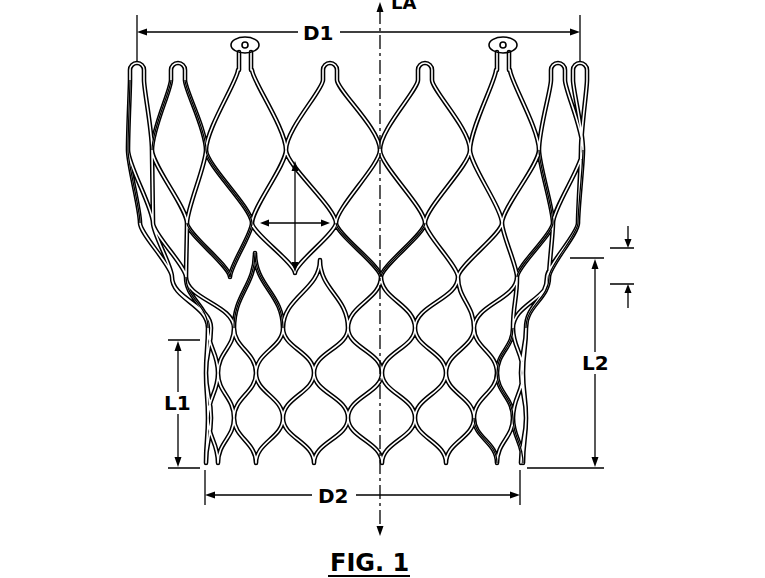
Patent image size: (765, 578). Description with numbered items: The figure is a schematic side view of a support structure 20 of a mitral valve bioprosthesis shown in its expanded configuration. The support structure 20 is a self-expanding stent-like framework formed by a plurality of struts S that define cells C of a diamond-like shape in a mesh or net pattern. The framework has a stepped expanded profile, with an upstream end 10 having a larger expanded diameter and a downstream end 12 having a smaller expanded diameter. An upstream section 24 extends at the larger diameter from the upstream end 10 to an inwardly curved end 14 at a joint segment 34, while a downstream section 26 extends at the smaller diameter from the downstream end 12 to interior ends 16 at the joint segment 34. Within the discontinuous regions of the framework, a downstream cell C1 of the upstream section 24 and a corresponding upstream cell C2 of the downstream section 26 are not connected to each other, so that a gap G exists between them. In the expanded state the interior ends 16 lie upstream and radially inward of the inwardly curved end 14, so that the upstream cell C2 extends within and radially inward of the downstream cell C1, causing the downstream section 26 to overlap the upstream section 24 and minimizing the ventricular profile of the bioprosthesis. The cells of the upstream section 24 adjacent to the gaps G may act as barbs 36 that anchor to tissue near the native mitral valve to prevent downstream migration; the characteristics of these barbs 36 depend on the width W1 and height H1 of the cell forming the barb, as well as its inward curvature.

The upstream end 10 is at (579, 64).
The downstream end 12 is at (528, 468).
The inwardly curved end 14 is at (579, 232).
The interior ends 16 is at (386, 277).
The support structure 20 is at (622, 189).
The upstream section 24 is at (128, 154).
The downstream section 26 is at (508, 375).
The joint segment 34 is at (625, 267).
The barbs 36 is at (550, 290).
The cells C is at (183, 160).
The downstream cell C1 is at (227, 226).
The upstream cell C2 is at (266, 330).
The width W1 is at (305, 221).
The height H1 is at (298, 240).
The gap G is at (237, 262).
The struts S is at (200, 295).